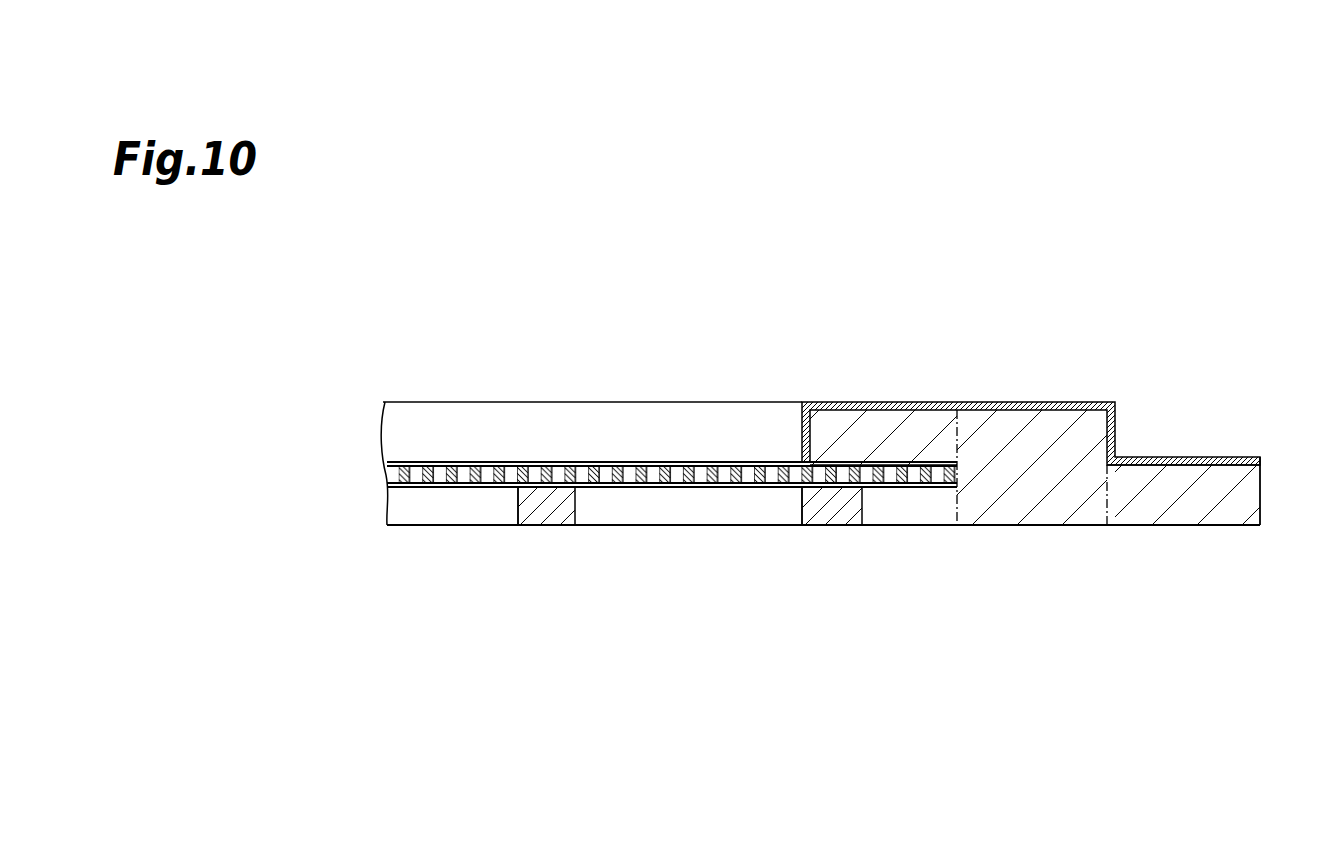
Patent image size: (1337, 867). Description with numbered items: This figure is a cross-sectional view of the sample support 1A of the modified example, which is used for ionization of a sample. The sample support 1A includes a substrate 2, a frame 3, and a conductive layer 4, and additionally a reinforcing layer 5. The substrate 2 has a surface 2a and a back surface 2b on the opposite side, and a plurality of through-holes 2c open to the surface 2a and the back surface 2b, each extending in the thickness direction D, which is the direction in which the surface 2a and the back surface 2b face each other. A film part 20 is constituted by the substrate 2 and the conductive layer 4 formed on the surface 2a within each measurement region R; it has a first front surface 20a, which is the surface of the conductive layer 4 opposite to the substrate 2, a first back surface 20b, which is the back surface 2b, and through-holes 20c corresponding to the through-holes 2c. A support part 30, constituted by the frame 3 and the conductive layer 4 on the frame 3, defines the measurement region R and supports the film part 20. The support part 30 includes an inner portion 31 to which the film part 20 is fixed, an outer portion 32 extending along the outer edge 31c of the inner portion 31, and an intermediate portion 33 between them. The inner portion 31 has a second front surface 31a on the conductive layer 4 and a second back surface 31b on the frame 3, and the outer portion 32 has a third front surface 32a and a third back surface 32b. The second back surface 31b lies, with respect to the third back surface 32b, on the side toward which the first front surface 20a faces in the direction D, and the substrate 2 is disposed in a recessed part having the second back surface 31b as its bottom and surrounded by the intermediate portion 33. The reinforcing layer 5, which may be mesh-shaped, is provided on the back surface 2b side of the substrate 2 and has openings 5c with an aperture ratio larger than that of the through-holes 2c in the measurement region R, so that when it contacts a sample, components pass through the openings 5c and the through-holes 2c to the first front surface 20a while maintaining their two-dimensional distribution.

The sample support 1A is at (1041, 394).
The substrate 2 is at (646, 512).
The surface 2a is at (419, 461).
The back surface 2b is at (418, 489).
The through-holes 2c is at (485, 488).
The frame 3 is at (975, 510).
The conductive layer 4 is at (452, 461).
The reinforcing layer 5 is at (556, 503).
The openings 5c is at (518, 490).
The film part 20 is at (727, 449).
The first front surface 20a is at (525, 461).
The first back surface 20b is at (437, 488).
The through-holes 20c is at (604, 488).
The support part 30 is at (1062, 537).
The inner portion 31 is at (988, 461).
The second front surface 31a is at (845, 401).
The second back surface 31b is at (890, 467).
The outer edge 31c is at (957, 430).
The outer portion 32 is at (1199, 501).
The third front surface 32a is at (1226, 456).
The third back surface 32b is at (1182, 527).
The intermediate portion 33 is at (1020, 506).
The measurement region R is at (636, 445).
The thickness direction D is at (247, 428).